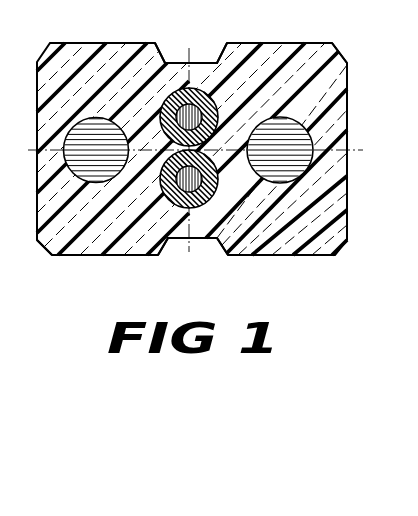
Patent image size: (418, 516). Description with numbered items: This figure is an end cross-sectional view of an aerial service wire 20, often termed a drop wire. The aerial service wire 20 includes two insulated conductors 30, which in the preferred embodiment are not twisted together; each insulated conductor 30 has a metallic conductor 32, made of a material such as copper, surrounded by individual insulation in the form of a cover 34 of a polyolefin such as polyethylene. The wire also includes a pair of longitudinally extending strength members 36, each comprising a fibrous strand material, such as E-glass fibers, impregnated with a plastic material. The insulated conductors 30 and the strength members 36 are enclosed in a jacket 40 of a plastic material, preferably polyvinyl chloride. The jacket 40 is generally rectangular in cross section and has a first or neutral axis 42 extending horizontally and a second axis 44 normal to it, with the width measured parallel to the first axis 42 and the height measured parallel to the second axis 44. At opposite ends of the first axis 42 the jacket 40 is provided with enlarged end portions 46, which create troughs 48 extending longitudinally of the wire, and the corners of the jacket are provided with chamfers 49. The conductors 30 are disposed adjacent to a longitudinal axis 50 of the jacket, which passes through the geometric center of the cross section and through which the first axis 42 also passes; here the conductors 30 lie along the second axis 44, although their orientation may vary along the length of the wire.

The aerial service wire 20 is at (352, 123).
The insulated conductor 30 is at (207, 142).
The metallic conductor 32 is at (205, 196).
The cover 34 is at (122, 239).
The strength member 36 is at (287, 125).
The jacket 40 is at (338, 226).
The first axis 42 is at (160, 143).
The second axis 44 is at (186, 247).
The enlarged end portion 46 is at (93, 48).
The trough 48 is at (154, 53).
The chamfer 49 is at (341, 56).
The longitudinal axis 50 is at (216, 112).